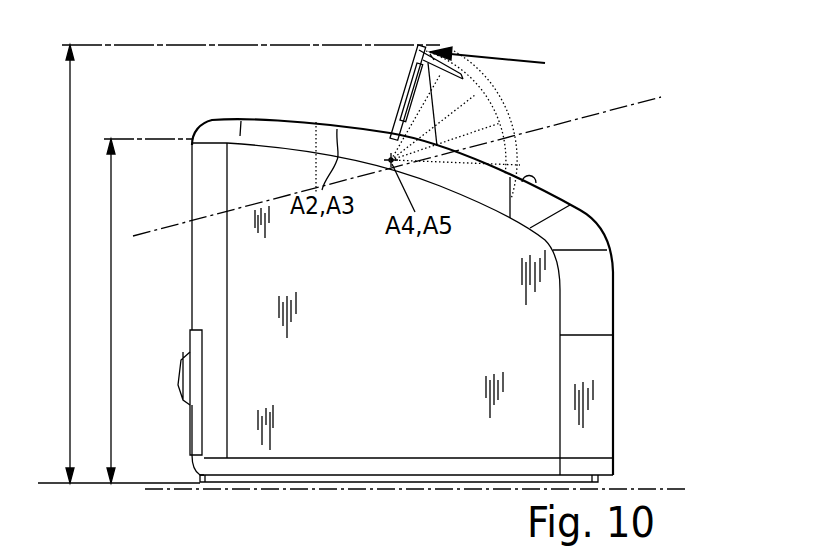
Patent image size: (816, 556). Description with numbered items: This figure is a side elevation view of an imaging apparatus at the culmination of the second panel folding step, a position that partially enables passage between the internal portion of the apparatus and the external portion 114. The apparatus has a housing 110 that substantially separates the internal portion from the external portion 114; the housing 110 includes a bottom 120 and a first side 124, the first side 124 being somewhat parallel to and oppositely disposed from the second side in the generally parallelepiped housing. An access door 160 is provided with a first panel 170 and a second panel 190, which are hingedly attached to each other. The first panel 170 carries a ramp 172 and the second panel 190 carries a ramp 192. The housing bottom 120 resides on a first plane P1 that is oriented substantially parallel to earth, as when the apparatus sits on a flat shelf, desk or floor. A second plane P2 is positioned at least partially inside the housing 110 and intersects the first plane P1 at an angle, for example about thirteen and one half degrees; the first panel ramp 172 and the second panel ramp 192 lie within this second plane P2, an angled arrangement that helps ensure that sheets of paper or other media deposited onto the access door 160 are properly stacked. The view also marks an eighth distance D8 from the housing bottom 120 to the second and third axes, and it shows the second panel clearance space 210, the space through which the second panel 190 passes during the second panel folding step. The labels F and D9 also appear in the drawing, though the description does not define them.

The housing 110 is at (600, 212).
The external portion 114 is at (670, 255).
The bottom 120 is at (284, 483).
The first side 124 is at (420, 336).
The access door 160 is at (350, 66).
The first panel 170 is at (388, 162).
The ramp 172 is at (368, 188).
The second panel 190 is at (388, 106).
The ramp 192 is at (410, 78).
The second panel clearance space 210 is at (490, 100).
The force F is at (486, 57).
The first plane P1 is at (672, 489).
The second plane P2 is at (630, 97).
The eighth distance D8 is at (111, 235).
The overall height D9 is at (70, 196).